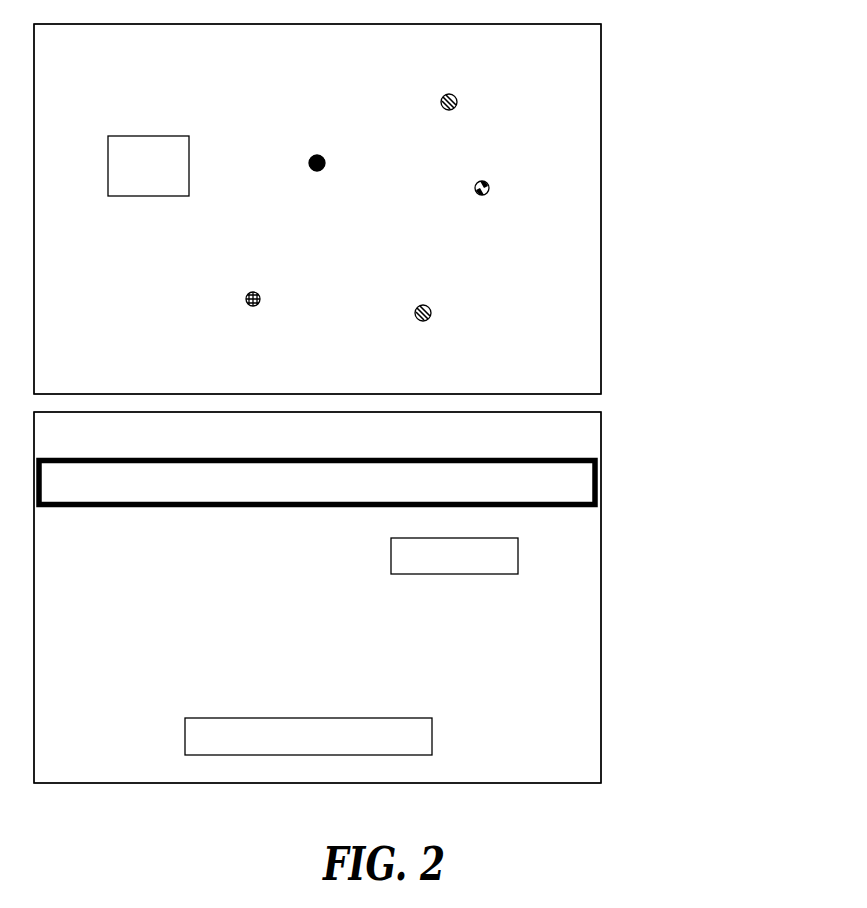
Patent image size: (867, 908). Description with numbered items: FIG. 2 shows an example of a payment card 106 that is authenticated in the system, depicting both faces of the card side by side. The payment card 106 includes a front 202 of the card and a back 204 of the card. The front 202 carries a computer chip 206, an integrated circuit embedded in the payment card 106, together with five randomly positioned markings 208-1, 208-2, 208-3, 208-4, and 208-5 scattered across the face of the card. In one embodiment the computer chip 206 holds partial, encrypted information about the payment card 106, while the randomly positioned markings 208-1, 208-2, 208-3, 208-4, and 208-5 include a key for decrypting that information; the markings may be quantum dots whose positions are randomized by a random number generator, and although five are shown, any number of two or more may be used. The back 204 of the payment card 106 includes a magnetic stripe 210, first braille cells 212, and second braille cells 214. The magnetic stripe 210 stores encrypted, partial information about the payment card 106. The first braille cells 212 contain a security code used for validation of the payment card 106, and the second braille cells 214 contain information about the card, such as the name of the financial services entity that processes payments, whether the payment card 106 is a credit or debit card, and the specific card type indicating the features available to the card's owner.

The payment card 106 is at (695, 12).
The front 202 is at (601, 70).
The back 204 is at (601, 435).
The computer chip 206 is at (170, 135).
The randomly positioned marking 208-1 is at (324, 156).
The randomly positioned marking 208-2 is at (455, 95).
The randomly positioned marking 208-3 is at (488, 182).
The randomly positioned marking 208-4 is at (259, 292).
The randomly positioned marking 208-5 is at (430, 306).
The magnetic stripe 210 is at (577, 477).
The first braille cells 212 is at (518, 554).
The second braille cells 214 is at (375, 718).